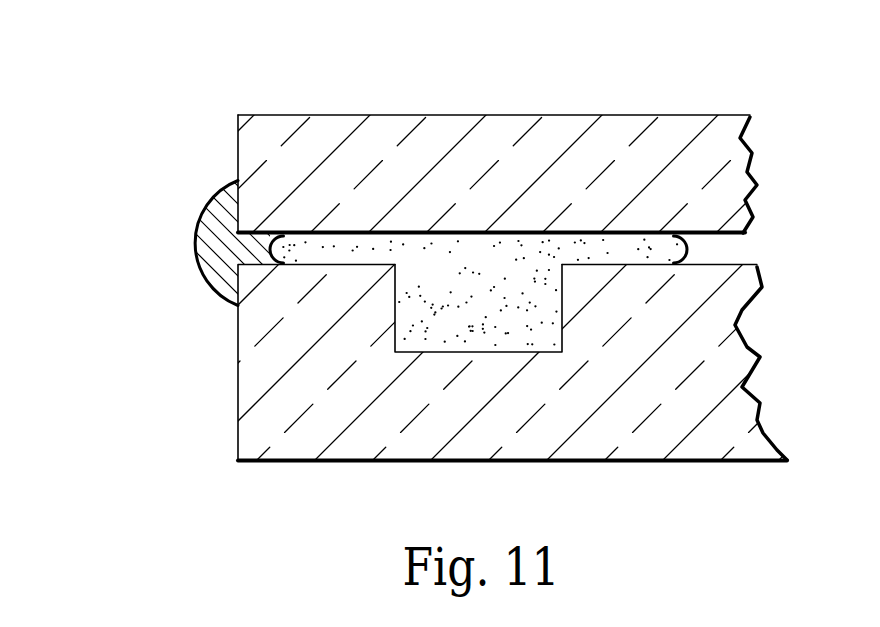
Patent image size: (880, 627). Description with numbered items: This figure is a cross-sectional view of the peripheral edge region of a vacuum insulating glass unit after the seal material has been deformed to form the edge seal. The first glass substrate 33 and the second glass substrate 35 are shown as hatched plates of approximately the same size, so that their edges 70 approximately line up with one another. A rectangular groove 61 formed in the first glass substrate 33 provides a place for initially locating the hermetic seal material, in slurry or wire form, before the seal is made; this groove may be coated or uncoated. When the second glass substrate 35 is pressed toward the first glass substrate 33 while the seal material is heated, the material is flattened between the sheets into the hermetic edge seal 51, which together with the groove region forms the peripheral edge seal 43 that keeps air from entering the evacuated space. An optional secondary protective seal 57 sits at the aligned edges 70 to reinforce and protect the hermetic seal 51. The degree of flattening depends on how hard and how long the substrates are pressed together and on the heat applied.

The first glass substrate 33 is at (603, 432).
The second glass substrate 35 is at (490, 150).
The peripheral edge seal 43 is at (150, 188).
The hermetic edge seal 51 is at (507, 283).
The secondary protective seal 57 is at (207, 235).
The rectangular groove 61 is at (563, 310).
The edges of the substrates 70 is at (240, 147).